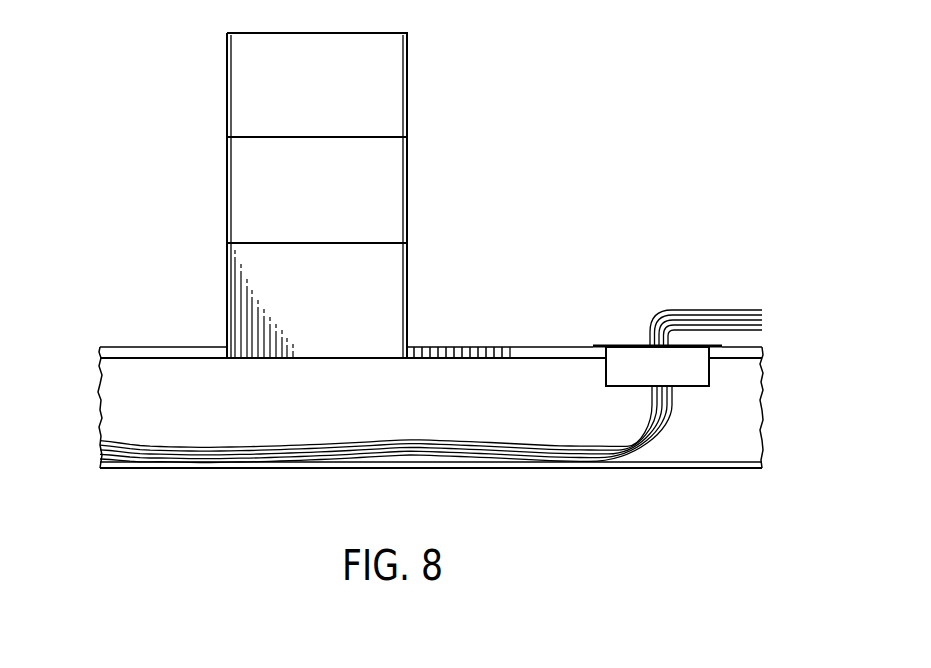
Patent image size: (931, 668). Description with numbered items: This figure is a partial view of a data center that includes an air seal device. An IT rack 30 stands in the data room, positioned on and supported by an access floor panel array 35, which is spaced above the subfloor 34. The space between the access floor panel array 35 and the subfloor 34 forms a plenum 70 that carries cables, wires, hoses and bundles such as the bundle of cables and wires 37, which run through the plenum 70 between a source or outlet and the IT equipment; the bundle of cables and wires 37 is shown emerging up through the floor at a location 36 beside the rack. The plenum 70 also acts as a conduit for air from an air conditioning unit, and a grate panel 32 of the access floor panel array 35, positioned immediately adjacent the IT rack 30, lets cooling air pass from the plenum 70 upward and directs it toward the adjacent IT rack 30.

The IT rack 30 is at (450, 97).
The grate panel 32 is at (459, 347).
The subfloor 34 is at (224, 470).
The access floor panel array 35 is at (165, 347).
The connector 36 is at (608, 330).
The bundle of cables and wires 37 is at (690, 310).
The space or plenum 70 is at (174, 413).